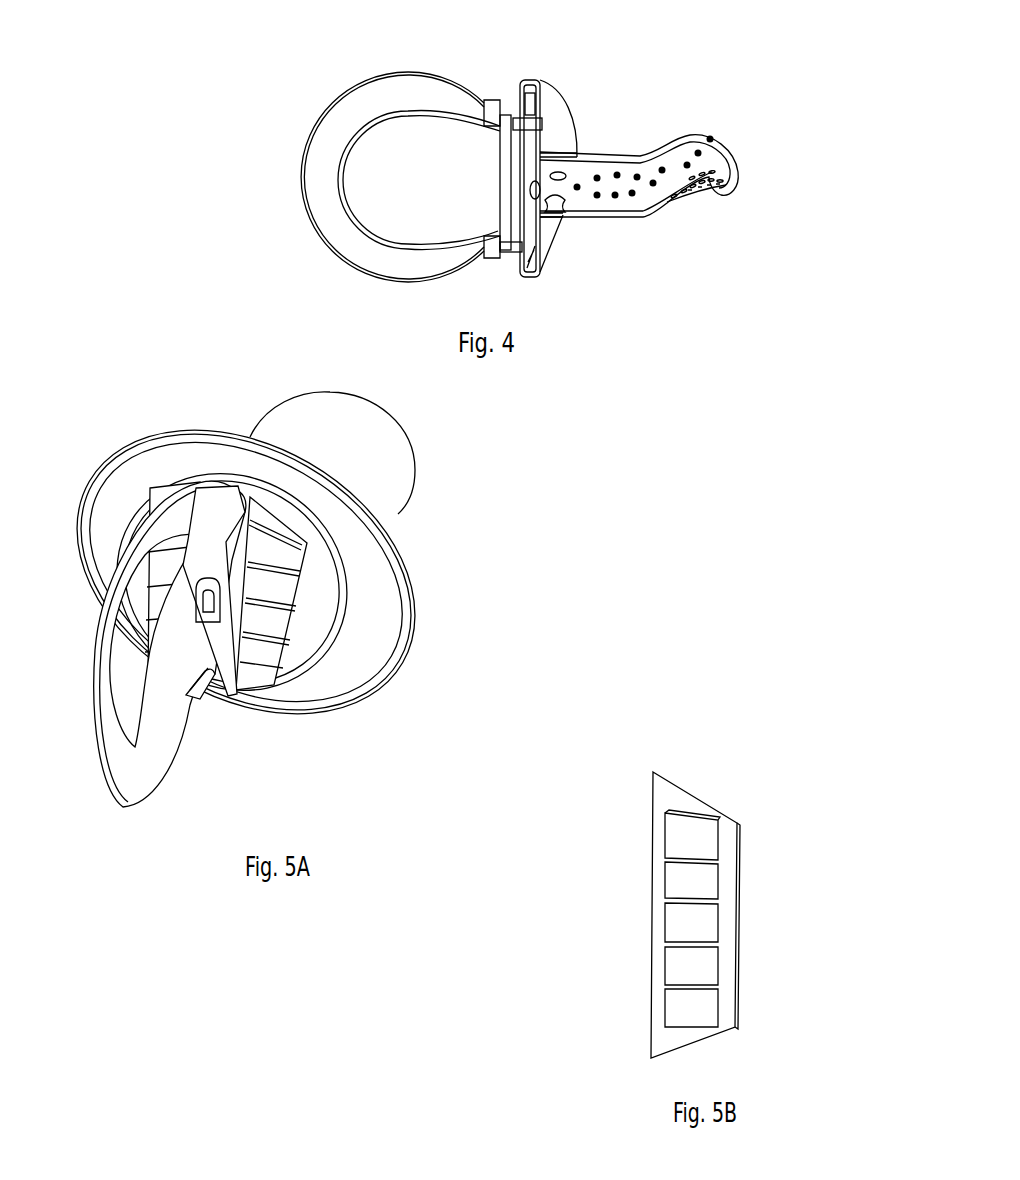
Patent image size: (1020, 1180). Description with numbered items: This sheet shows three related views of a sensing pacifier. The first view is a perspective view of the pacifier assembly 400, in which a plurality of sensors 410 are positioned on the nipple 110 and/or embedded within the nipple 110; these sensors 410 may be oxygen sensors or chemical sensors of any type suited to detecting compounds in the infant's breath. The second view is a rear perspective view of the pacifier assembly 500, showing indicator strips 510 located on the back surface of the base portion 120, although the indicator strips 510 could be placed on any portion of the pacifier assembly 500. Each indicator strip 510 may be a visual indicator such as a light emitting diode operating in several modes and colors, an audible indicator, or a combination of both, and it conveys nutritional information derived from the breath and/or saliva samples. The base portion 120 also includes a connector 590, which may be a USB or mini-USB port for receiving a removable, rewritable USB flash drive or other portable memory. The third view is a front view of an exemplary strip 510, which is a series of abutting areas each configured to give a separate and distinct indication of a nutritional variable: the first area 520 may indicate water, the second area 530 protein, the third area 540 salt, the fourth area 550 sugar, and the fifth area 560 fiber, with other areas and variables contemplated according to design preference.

In FIG. 4, the pacifier assembly 400 is at (712, 70).
In FIG. 4, the sensors 410 is at (637, 176).
In FIG. 4, the nipple 110 is at (738, 165).
In FIG. 5A, the nipple 110 is at (412, 440).
In FIG. 5A, the pacifier assembly 500 is at (151, 340).
In FIG. 5A, the base portion 120 is at (171, 442).
In FIG. 5A, the indicator strips 510 is at (150, 516).
In FIG. 5B, the indicator strips 510 is at (792, 682).
In FIG. 5A, the connector 590 is at (208, 622).
In FIG. 5B, the first area 520 is at (682, 837).
In FIG. 5B, the second area 530 is at (697, 887).
In FIG. 5B, the third area 540 is at (678, 933).
In FIG. 5B, the fourth area 550 is at (693, 968).
In FIG. 5B, the fifth area 560 is at (682, 1012).